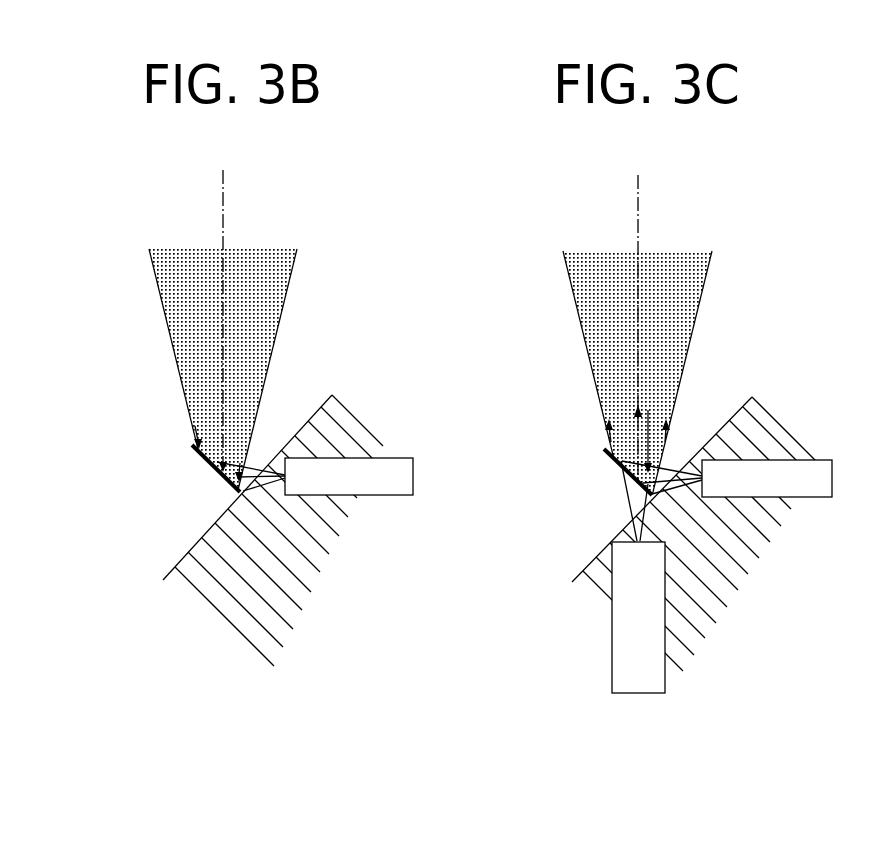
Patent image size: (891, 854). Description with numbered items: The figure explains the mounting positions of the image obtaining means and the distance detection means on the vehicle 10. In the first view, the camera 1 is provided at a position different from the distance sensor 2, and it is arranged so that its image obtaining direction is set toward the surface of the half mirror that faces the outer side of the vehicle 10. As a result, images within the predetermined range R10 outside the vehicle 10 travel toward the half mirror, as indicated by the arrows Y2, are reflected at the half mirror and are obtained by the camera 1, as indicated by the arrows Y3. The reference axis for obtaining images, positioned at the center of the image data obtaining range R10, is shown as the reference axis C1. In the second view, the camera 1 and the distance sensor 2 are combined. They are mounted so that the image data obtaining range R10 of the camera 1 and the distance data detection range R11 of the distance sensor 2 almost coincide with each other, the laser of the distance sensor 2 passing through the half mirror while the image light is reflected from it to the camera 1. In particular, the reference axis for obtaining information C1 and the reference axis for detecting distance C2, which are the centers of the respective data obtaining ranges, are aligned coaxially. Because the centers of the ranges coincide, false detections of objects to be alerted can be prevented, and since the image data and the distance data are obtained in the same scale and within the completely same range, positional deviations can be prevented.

In FIG. 3B, the camera 1 is at (399, 496).
In FIG. 3C, the camera 1 is at (818, 498).
In FIG. 3C, the distance sensor 2 is at (657, 694).
In FIG. 3B, the vehicle 10 is at (330, 396).
In FIG. 3C, the vehicle 10 is at (748, 397).
In FIG. 3B, the image data obtaining range R10 is at (190, 262).
In FIG. 3C, the image data obtaining range R10 is at (587, 262).
In FIG. 3C, the distance data detection range R11 is at (587, 262).
In FIG. 3B, the reference axis for obtaining images C1 is at (224, 220).
In FIG. 3C, the reference axis for obtaining images C1 is at (640, 218).
In FIG. 3C, the reference axis for detecting distance C2 is at (722, 213).
In FIG. 3B, the arrow Y2 is at (287, 295).
In FIG. 3B, the arrow Y3 is at (233, 446).